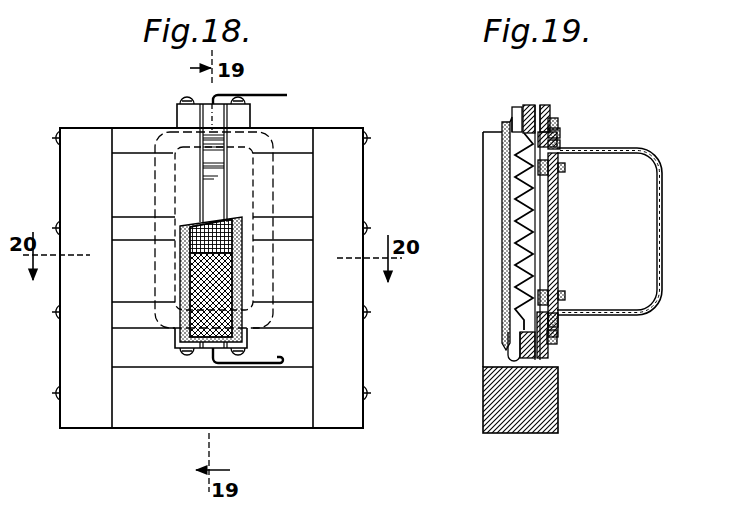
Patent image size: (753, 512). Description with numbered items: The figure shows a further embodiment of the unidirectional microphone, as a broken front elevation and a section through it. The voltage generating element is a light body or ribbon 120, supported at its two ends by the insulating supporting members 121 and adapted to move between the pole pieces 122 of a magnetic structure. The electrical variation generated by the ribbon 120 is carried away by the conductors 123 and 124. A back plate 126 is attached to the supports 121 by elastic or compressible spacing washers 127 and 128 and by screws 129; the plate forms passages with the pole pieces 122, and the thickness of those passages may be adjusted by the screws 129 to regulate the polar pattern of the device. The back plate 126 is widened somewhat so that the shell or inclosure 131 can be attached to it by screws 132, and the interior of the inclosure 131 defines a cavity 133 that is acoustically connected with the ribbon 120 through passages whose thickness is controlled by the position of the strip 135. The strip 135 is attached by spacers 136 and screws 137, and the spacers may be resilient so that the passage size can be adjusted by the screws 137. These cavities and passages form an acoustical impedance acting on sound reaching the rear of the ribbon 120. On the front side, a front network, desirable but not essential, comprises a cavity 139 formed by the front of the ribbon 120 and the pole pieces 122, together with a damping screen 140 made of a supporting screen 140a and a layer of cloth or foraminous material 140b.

In FIG. 18, the ribbon 120 is at (203, 174).
In FIG. 19, the ribbon 120 is at (533, 175).
In FIG. 19, the insulating supporting members 121 is at (535, 107).
In FIG. 19, the pole pieces 122 is at (528, 162).
In FIG. 18, the conductor 123 is at (284, 364).
In FIG. 18, the conductor 124 is at (268, 92).
In FIG. 19, the back plate 126 is at (557, 147).
In FIG. 19, the spacing washer 127 is at (537, 110).
In FIG. 19, the spacing washer 128 is at (533, 357).
In FIG. 19, the screws 129 is at (552, 117).
In FIG. 19, the inclosure 131 is at (663, 208).
In FIG. 19, the screws 132 is at (557, 133).
In FIG. 19, the cavity 133 is at (627, 243).
In FIG. 19, the strip 135 is at (560, 230).
In FIG. 19, the spacers 136 is at (558, 163).
In FIG. 19, the screws 137 is at (562, 173).
In FIG. 19, the cavity 139 is at (514, 228).
In FIG. 19, the damping screen 140 is at (499, 266).
In FIG. 18, the supporting screen 140a is at (213, 288).
In FIG. 19, the supporting screen 140a is at (501, 288).
In FIG. 18, the layer of cloth or foraminous material 140b is at (240, 217).
In FIG. 19, the layer of cloth or foraminous material 140b is at (501, 320).